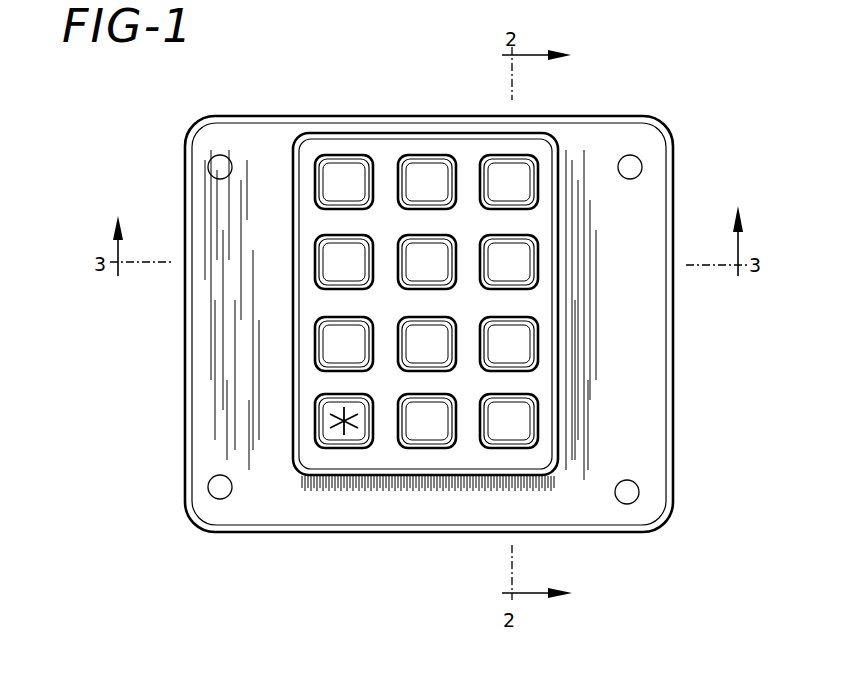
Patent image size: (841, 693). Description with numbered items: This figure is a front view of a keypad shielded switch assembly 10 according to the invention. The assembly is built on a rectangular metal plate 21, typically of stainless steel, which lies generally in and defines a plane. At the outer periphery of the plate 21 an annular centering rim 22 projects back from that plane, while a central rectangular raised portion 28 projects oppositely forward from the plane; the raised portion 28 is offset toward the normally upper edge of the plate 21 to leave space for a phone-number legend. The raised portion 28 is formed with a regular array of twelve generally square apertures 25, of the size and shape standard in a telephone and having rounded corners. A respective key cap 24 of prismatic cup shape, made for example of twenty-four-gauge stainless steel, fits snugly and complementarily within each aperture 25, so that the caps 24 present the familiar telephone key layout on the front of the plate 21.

The keypad shielded switch assembly 10 is at (150, 133).
The rectangular metal plate 21 is at (645, 399).
The annular centering rim 22 is at (185, 400).
The key cap 24 is at (410, 178).
The square apertures 25 is at (322, 198).
The raised portion 28 is at (388, 460).